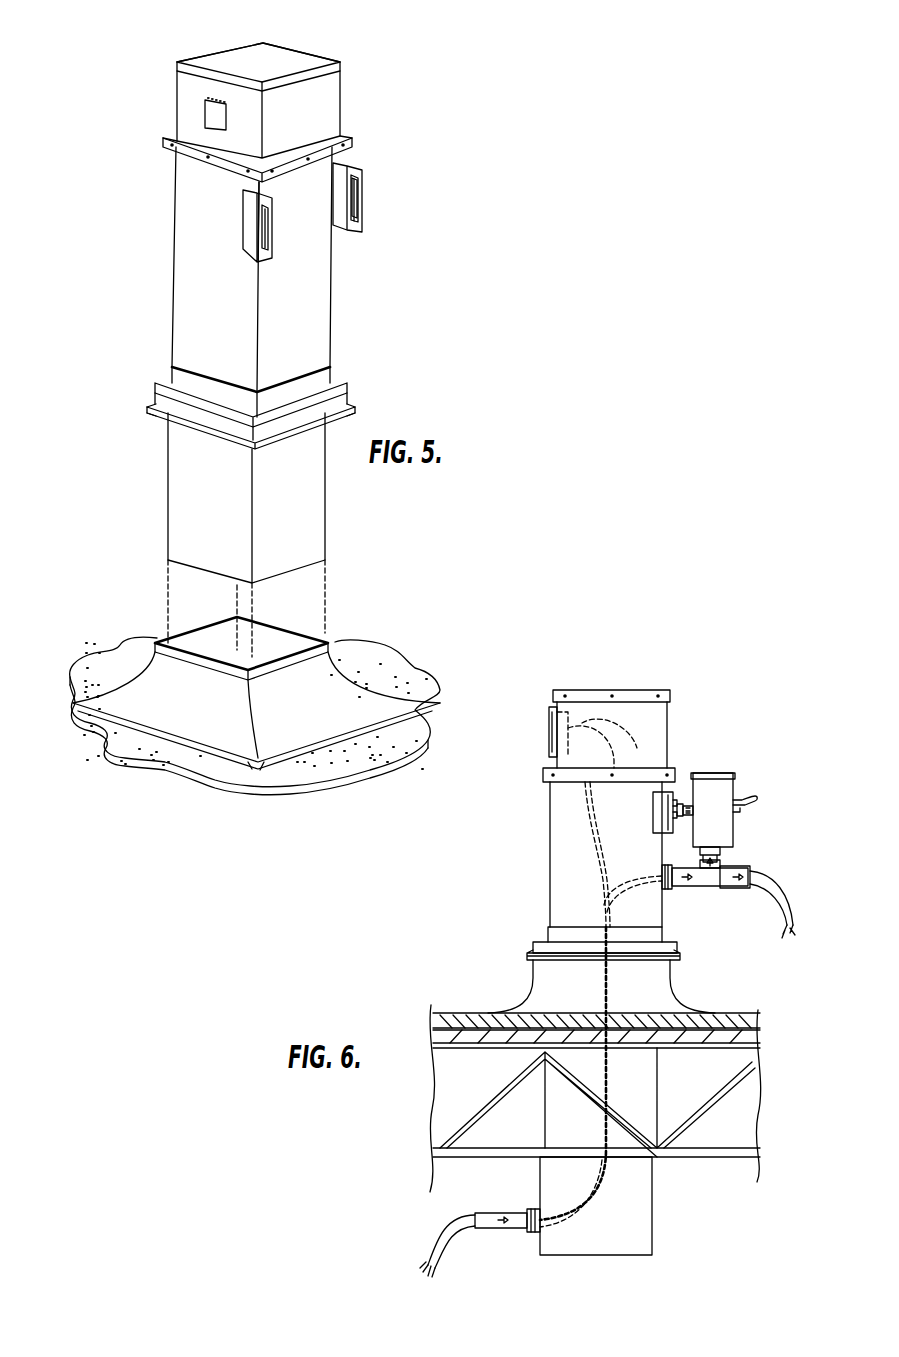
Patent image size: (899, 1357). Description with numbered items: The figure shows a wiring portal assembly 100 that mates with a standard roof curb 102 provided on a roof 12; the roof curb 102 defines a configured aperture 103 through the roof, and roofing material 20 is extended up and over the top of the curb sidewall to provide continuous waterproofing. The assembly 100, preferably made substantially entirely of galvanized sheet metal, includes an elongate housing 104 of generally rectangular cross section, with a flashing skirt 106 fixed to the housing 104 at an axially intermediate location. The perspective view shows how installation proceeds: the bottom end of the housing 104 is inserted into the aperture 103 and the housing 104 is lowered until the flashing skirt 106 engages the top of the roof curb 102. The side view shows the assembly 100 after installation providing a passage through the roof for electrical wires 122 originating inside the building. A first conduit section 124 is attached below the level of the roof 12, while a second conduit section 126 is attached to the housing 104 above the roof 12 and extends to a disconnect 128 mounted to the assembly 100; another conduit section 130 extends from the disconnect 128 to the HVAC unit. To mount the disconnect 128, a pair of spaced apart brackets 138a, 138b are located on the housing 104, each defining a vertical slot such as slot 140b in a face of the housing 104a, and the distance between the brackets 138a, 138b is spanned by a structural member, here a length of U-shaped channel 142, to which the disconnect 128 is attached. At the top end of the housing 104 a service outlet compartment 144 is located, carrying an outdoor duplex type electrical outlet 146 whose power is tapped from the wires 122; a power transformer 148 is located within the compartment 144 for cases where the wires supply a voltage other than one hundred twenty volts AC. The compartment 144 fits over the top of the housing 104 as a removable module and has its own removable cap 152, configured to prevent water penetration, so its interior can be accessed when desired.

In FIG. 5, the roof 12 is at (418, 674).
In FIG. 6, the roofing material 20 is at (722, 1012).
In FIG. 5, the wiring portal assembly 100 is at (362, 313).
In FIG. 6, the wiring portal assembly 100 is at (550, 833).
In FIG. 5, the roof curb 102 is at (318, 675).
In FIG. 6, the roof curb 102 is at (522, 995).
In FIG. 5, the configured aperture 103 is at (203, 643).
In FIG. 5, the elongate housing 104 is at (190, 300).
In FIG. 6, the elongate housing 104 is at (664, 910).
In FIG. 5, the post face 104a is at (263, 240).
In FIG. 5, the flashing skirt 106 is at (342, 393).
In FIG. 6, the flashing skirt 106 is at (528, 947).
In FIG. 6, the electrical wires 122 is at (440, 1232).
In FIG. 6, the first conduit section 124 is at (483, 1228).
In FIG. 6, the second conduit section 126 is at (700, 878).
In FIG. 6, the disconnect 128 is at (717, 773).
In FIG. 6, the conduit section 130 is at (740, 863).
In FIG. 5, the bracket 138a is at (245, 225).
In FIG. 6, the bracket 138a is at (653, 797).
In FIG. 5, the bracket 138b is at (363, 175).
In FIG. 5, the vertical slot 140b is at (363, 208).
In FIG. 6, the U-shaped channel 142 is at (682, 797).
In FIG. 5, the service outlet compartment 144 is at (318, 105).
In FIG. 6, the service outlet compartment 144 is at (592, 715).
In FIG. 5, the electrical outlet 146 is at (210, 115).
In FIG. 6, the electrical outlet 146 is at (550, 727).
In FIG. 6, the power transformer 148 is at (617, 748).
In FIG. 5, the removable cap 152 is at (212, 60).
In FIG. 6, the removable cap 152 is at (633, 690).